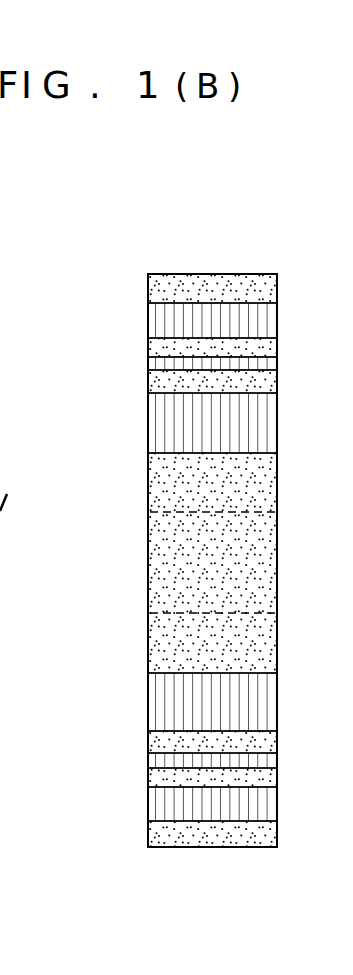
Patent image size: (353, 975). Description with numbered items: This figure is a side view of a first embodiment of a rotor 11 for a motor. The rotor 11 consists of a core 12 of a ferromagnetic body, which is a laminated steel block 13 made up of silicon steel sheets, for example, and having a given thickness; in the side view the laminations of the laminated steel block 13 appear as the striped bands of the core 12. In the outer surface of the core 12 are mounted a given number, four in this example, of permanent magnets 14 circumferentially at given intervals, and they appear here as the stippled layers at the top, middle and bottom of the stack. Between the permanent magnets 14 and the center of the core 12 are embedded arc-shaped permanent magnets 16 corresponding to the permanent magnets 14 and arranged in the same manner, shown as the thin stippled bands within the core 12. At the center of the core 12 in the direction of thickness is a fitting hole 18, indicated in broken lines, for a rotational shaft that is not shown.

The rotor 11 is at (134, 232).
The core 12 is at (275, 703).
The laminated steel block 13 is at (263, 415).
The permanent magnets 14 is at (245, 288).
The arc-shaped permanent magnets 16 is at (165, 347).
The fitting hole 18 is at (200, 612).